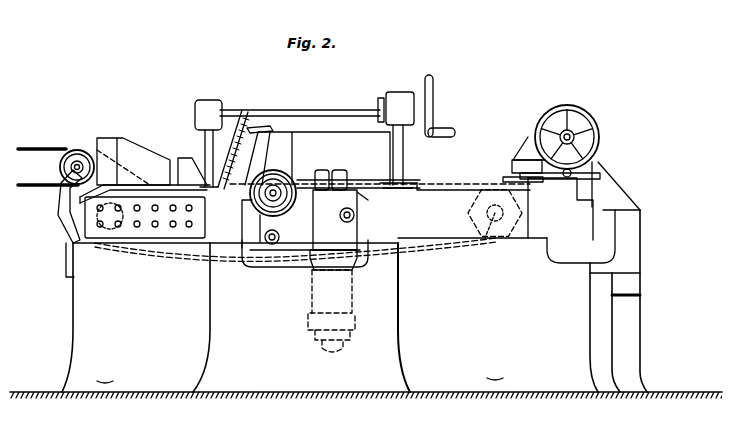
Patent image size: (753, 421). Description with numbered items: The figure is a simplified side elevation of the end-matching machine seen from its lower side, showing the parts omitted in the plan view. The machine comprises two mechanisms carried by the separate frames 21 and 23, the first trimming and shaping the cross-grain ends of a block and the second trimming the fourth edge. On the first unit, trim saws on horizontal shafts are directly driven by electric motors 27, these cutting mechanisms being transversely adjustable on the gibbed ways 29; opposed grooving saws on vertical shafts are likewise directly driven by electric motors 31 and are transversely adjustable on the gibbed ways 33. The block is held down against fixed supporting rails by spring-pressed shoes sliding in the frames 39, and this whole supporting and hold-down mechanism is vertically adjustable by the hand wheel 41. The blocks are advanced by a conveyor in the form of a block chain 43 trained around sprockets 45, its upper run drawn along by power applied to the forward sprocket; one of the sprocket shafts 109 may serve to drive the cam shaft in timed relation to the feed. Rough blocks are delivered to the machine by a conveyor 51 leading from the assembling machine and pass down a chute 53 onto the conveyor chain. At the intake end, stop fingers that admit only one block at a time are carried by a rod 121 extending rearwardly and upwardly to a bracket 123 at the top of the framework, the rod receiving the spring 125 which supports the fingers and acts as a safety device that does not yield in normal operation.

The frame 21 is at (210, 298).
The frame 23 is at (641, 290).
The electric motor 27 is at (274, 209).
The gibbed ways 29 is at (238, 260).
The electric motor 31 is at (344, 292).
The gibbed ways 33 is at (362, 193).
The frame 39 is at (331, 140).
The hand wheel 41 is at (434, 131).
The block chain 43 is at (462, 189).
The sprocket 45 is at (77, 229).
The conveyor 51 is at (48, 150).
The chute 53 is at (122, 168).
The sprocket shaft 109 is at (500, 232).
The rod 121 is at (242, 110).
The bracket 123 is at (253, 126).
The spring 125 is at (213, 143).